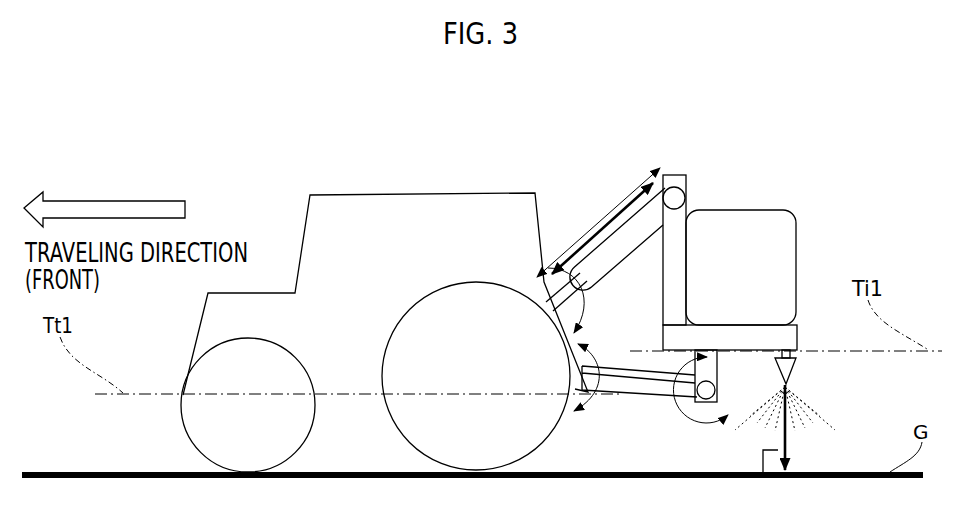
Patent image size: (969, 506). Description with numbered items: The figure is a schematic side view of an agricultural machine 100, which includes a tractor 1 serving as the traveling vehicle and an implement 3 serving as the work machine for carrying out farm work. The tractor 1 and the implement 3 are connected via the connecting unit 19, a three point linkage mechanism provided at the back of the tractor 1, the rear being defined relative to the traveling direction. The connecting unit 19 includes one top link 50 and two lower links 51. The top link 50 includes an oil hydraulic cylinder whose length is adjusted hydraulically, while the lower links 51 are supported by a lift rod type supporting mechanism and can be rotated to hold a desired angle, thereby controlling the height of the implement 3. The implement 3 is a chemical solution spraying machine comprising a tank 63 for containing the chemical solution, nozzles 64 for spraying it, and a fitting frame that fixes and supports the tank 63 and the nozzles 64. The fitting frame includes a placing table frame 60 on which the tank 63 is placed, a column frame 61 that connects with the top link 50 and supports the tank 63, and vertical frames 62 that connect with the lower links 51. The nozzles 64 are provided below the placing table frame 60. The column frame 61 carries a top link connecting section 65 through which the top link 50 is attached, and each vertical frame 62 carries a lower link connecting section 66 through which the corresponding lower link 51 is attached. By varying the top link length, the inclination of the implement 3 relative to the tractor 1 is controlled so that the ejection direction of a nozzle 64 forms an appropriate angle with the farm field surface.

The agricultural machine 100 is at (192, 142).
The tractor 1 is at (333, 180).
The connecting unit 19 is at (658, 159).
The implement 3 is at (793, 159).
The top link 50 is at (646, 243).
The vertical frame 62 is at (693, 354).
The lower link 51 is at (582, 346).
The placing table frame 60 is at (798, 342).
The column frame 61 is at (663, 297).
The tank 63 is at (797, 242).
The nozzle 64 is at (797, 372).
The top link connecting section 65 is at (688, 198).
The lower link connecting section 66 is at (711, 401).